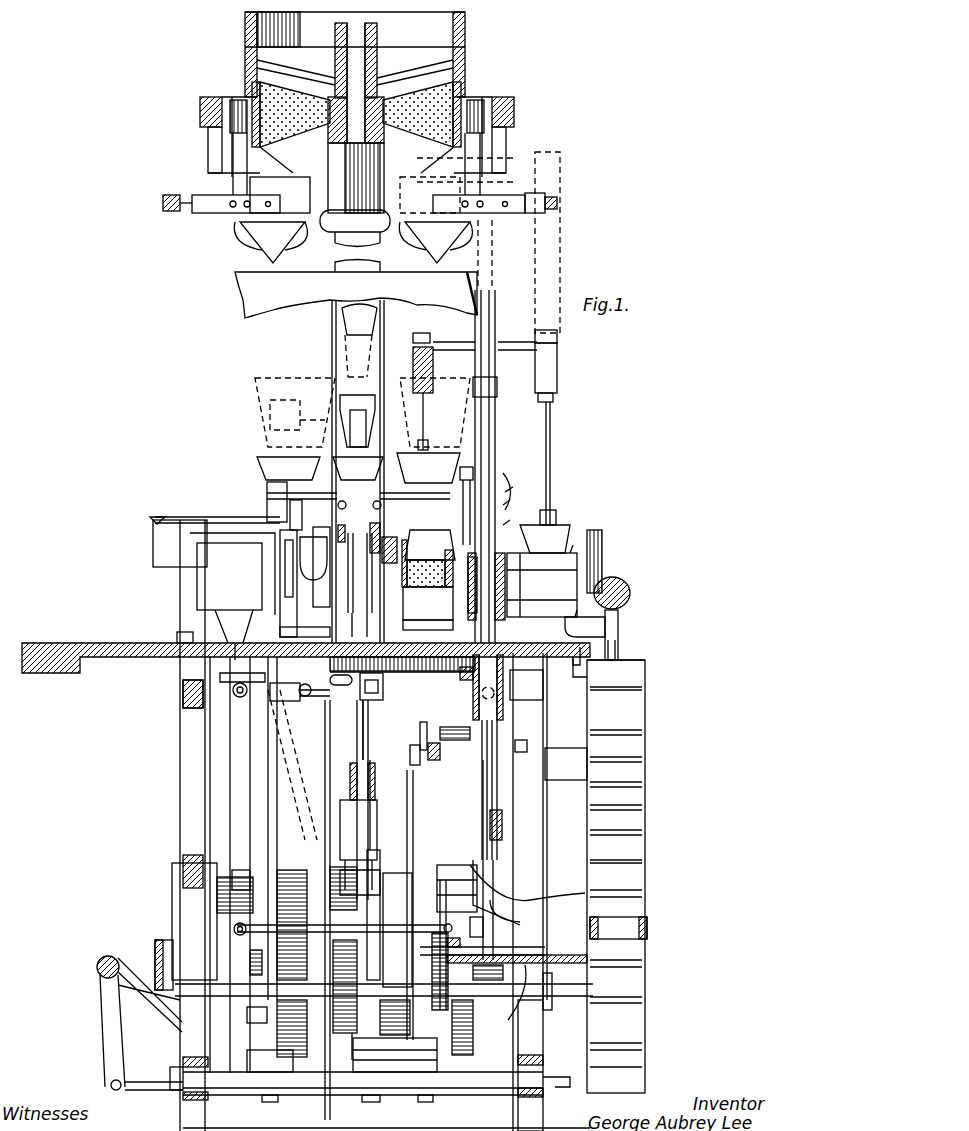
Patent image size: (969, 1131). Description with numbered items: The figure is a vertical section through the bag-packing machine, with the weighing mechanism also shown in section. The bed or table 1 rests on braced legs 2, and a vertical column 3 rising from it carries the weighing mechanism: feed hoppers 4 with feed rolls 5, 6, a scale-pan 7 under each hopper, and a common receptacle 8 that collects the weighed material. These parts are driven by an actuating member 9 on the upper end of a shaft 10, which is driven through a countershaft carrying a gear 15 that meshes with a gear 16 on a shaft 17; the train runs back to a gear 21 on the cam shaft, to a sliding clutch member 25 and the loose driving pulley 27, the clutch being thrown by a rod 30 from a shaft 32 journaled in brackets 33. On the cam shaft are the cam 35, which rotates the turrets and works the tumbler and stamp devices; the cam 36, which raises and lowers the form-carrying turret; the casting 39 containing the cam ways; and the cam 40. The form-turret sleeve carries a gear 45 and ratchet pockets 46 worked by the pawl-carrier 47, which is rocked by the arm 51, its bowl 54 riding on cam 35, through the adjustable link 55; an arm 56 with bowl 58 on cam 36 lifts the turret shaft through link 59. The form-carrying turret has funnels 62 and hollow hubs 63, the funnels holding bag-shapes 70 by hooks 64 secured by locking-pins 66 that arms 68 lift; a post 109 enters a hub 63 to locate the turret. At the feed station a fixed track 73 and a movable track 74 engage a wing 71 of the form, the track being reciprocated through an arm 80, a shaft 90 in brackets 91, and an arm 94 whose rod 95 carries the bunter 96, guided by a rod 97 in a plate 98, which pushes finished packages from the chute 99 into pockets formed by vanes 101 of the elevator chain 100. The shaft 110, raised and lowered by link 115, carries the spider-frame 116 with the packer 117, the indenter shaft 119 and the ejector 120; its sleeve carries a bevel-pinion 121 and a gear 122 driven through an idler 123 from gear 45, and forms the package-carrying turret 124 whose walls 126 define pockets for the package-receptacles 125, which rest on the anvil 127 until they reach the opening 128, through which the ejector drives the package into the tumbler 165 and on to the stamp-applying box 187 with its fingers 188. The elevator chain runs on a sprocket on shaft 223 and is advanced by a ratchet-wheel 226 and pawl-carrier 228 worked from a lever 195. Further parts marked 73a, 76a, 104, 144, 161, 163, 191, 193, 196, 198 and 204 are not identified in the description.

The bed or table 1 is at (120, 643).
The legs 2 is at (548, 843).
The vertical post or column 3 is at (333, 350).
The feed hoppers or chambers 4 is at (407, 83).
The feed roll 5 is at (290, 125).
The feed roll 6 is at (440, 97).
The scale-pan 7 is at (462, 220).
The hopper or receptacle 8 is at (243, 290).
The actuating member 9 is at (463, 63).
The shaft 10 is at (350, 52).
The gear 15 is at (577, 548).
The gear 16 is at (627, 593).
The shaft 17 is at (620, 643).
The gear 21 is at (297, 1020).
The sliding clutch member 25 is at (487, 1007).
The loose driving pulley 27 is at (233, 677).
The rod 30 is at (157, 1077).
The shaft 32 is at (98, 962).
The brackets 33 is at (127, 960).
The cam 35 is at (253, 907).
The cam 36 is at (347, 1020).
The casting 39 is at (384, 923).
The cam 40 is at (473, 1055).
The gear 45 is at (330, 687).
The pockets 46 is at (383, 693).
The pawl-carrier 47 is at (350, 713).
The lever or arm 51 is at (260, 772).
The bowl 54 is at (260, 960).
The adjustable link 55 is at (293, 683).
The arm or lever 56 is at (355, 873).
The bowl 58 is at (345, 915).
The link 59 is at (347, 847).
The hoppers or funnels 62 is at (428, 468).
The depending hollow lugs or hubs 63 is at (283, 488).
The hooks 64 is at (430, 510).
The gravitating locking-pin 66 is at (310, 493).
The arms 68 is at (280, 518).
The bag-shape or holder 70 is at (250, 572).
The wings 71 is at (210, 517).
The fixed track or support 73 is at (173, 532).
The bracket 73a is at (305, 600).
The movable track or support 74 is at (398, 565).
The chamber 76a is at (400, 593).
The arm or lever 80 is at (352, 1060).
The shaft 90 is at (233, 680).
The brackets or bearings 91 is at (233, 643).
The arm or lever 94 is at (240, 733).
The rod 95 is at (237, 930).
The bunter or push-plate 96 is at (507, 908).
The guide-rod 97 is at (525, 970).
The supporting bed or plate 98 is at (552, 1010).
The discharge chute or way 99 is at (505, 877).
The endless chain 100 is at (640, 927).
The vane or shelf 101 is at (645, 730).
The nozzle 104 is at (333, 427).
The post 109 is at (267, 468).
The shaft 110 is at (497, 447).
The link 115 is at (580, 895).
The spider-frame 116 is at (540, 380).
The packer 117 is at (510, 520).
The shaft 119 is at (553, 452).
The package-ejector 120 is at (490, 578).
The bevel-pinion 121 is at (466, 673).
The gear 122 is at (527, 653).
The idler 123 is at (425, 673).
The package-carrying turret 124 is at (573, 545).
The package-receptacle 125 is at (577, 610).
The walls 126 is at (600, 590).
The anvil or support 127 is at (630, 628).
The opening 128 is at (618, 647).
The lever 144 is at (513, 487).
The lever 161 is at (510, 500).
The cup 163 is at (557, 533).
The open-ended box or tumbler 165 is at (480, 708).
The open-ended oblong chamber or box-like structure 187 is at (500, 825).
The fingers 188 is at (543, 780).
The tube 191 is at (467, 790).
The valve 193 is at (440, 770).
The lever 195 is at (413, 827).
The block 196 is at (480, 732).
The block 198 is at (500, 730).
The bracket 204 is at (420, 735).
The shaft 223 is at (565, 757).
The ratchet-wheel 226 is at (440, 1010).
The pawl-carrier 228 is at (413, 1040).